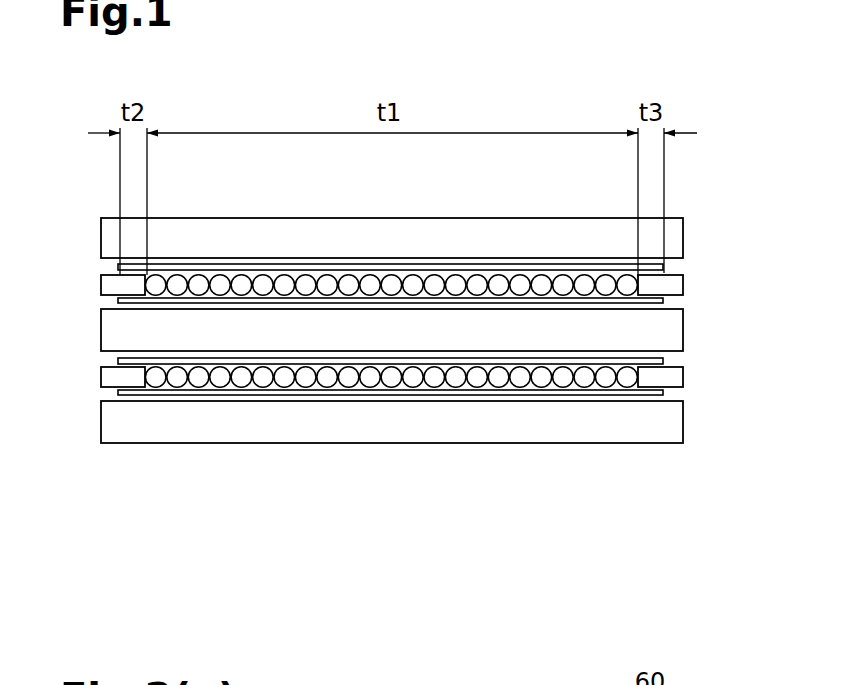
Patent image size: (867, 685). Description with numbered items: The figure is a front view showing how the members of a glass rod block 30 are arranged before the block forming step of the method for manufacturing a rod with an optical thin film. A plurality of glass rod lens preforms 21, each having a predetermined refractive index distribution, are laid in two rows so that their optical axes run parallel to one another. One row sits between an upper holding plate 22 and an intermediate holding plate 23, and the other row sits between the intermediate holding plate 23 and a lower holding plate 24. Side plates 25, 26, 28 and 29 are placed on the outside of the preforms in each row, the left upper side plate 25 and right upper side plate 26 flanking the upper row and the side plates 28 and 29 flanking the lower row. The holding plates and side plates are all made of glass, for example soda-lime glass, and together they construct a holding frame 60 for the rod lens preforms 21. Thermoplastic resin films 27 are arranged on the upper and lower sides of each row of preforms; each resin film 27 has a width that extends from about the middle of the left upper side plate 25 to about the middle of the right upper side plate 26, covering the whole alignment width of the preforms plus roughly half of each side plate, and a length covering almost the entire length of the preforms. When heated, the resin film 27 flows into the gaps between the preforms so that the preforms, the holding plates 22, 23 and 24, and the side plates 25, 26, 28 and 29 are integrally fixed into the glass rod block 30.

The glass rod lens preform 21 is at (197, 280).
The upper holding plate 22 is at (383, 226).
The intermediate holding plate 23 is at (683, 322).
The lower holding plate 24 is at (125, 441).
The left upper side plate 25 is at (105, 283).
The right upper side plate 26 is at (683, 284).
The thermoplastic resin film 27 is at (255, 270).
The side plate 28 is at (105, 376).
The side plate 29 is at (683, 380).
The glass rod block 30 is at (403, 335).
The holding frame 60 is at (425, 454).